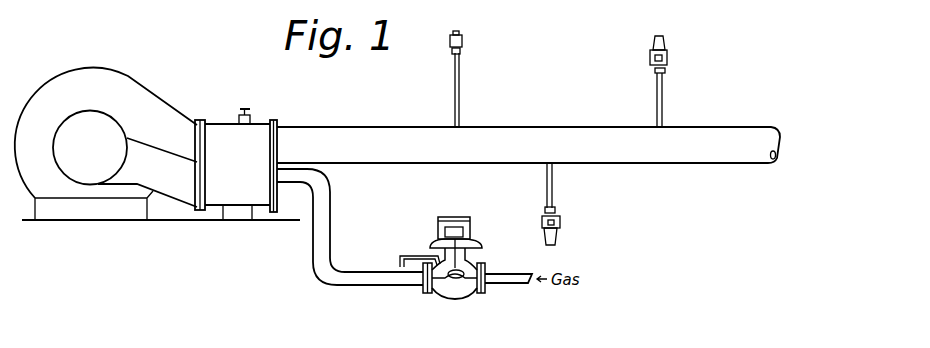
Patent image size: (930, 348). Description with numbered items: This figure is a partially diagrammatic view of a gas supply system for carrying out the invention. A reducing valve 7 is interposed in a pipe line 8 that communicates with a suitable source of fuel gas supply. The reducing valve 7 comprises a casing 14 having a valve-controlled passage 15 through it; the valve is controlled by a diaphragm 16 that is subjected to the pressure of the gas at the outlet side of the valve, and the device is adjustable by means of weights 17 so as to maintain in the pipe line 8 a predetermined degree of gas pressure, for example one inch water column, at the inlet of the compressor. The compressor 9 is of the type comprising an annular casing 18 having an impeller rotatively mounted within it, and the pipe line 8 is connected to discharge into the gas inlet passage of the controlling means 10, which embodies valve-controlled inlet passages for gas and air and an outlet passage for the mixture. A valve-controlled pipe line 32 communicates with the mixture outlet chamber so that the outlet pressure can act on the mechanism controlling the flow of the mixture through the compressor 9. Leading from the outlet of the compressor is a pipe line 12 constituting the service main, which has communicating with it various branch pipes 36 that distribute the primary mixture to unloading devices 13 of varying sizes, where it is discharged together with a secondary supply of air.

The reducing valve 7 is at (455, 297).
The pipe line 8 is at (346, 272).
The compressor 9 is at (125, 75).
The controlling means 10 is at (218, 122).
The pipe line (service main) 12 is at (343, 127).
The unloading devices 13 is at (470, 60).
The casing 14 is at (437, 295).
The valve-controlled passage 15 is at (484, 271).
The diaphragm 16 is at (473, 236).
The weights 17 is at (465, 215).
The annular casing 18 is at (57, 90).
The valve-controlled pipe line 32 is at (250, 119).
The branch pipes 36 is at (458, 102).